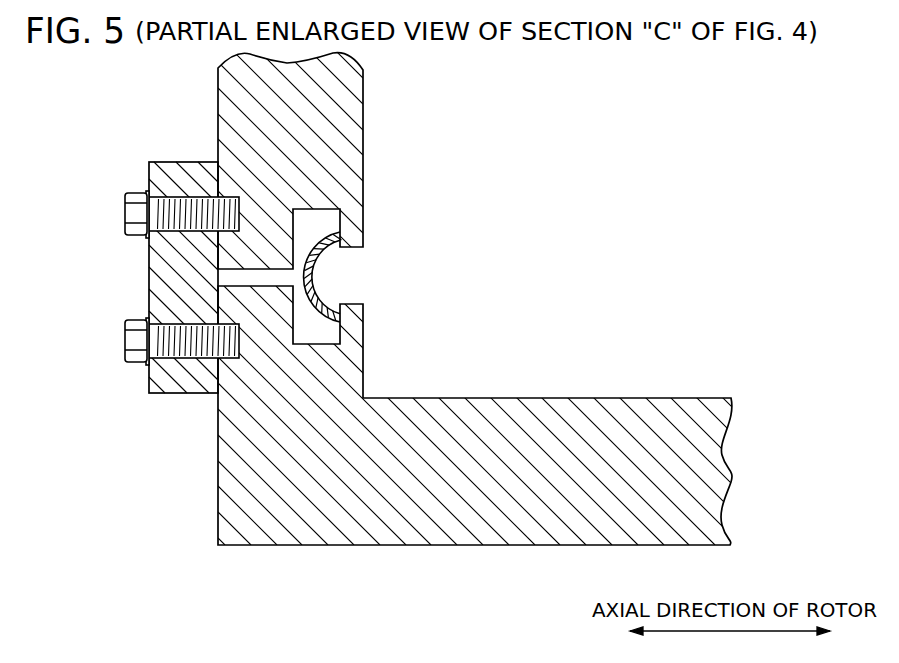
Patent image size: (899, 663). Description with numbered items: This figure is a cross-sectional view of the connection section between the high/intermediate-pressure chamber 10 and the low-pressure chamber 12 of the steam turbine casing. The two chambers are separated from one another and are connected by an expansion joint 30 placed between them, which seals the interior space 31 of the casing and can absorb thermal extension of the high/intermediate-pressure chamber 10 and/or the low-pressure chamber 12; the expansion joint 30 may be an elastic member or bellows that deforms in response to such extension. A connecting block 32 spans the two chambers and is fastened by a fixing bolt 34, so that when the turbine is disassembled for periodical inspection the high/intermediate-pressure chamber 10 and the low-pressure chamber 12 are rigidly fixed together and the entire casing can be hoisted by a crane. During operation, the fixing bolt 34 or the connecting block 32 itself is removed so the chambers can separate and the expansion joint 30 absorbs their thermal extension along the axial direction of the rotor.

The high/intermediate-pressure chamber 10 is at (218, 85).
The low-pressure chamber 12 is at (608, 398).
The expansion joint 30 is at (318, 273).
The interior space 31 is at (469, 314).
The connecting block 32 is at (193, 394).
The fixing bolt 34 is at (125, 213).